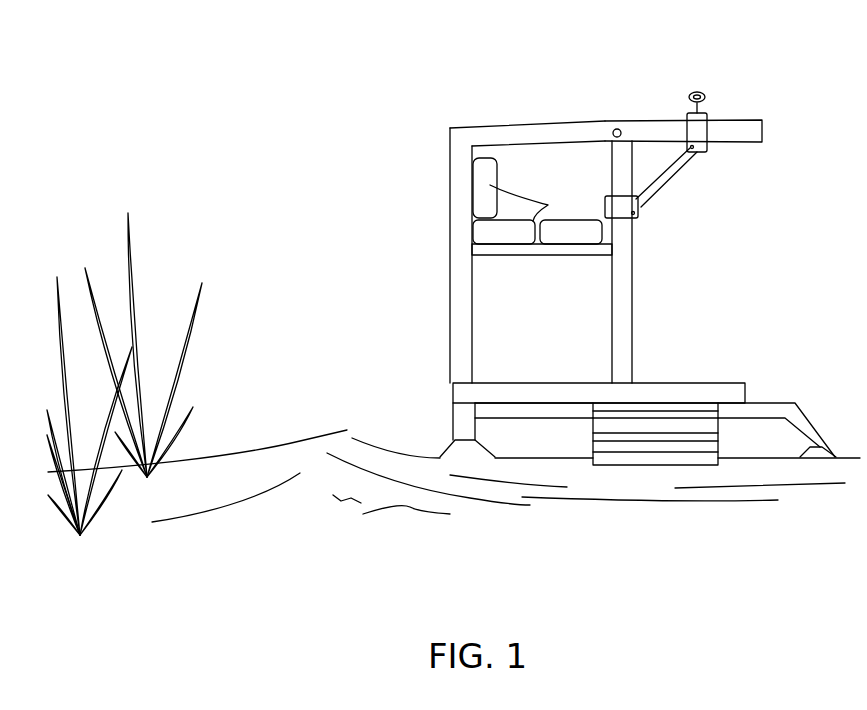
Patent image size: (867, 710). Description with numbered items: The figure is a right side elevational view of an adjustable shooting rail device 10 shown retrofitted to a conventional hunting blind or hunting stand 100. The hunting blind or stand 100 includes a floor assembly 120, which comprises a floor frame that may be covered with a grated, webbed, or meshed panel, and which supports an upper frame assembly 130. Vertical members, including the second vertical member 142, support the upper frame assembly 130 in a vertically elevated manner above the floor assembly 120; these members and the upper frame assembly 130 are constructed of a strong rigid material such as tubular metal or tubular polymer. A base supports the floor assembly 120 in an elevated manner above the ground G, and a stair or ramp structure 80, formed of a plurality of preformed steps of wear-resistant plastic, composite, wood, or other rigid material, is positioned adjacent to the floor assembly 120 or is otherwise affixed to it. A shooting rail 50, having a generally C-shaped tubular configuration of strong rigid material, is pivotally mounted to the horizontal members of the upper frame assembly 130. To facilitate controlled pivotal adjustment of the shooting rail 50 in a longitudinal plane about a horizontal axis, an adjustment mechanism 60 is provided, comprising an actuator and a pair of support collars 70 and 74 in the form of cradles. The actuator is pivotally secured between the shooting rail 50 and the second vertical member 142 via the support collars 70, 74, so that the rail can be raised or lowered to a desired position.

The adjustable shooting rail device 10 is at (447, 102).
The hunting blind or hunting stand 100 is at (398, 182).
The upper frame assembly 130 is at (518, 105).
The second vertical member 142 is at (633, 320).
The floor assembly 120 is at (735, 383).
The shooting rail 50 is at (733, 142).
The support collar 74 is at (702, 128).
The adjustment mechanism 60 is at (697, 197).
The support collar 70 is at (622, 210).
The stair or ramp structure 80 is at (718, 447).
The ground G is at (650, 483).